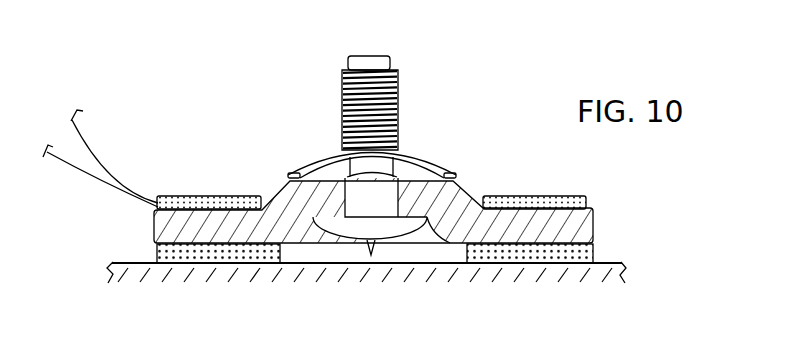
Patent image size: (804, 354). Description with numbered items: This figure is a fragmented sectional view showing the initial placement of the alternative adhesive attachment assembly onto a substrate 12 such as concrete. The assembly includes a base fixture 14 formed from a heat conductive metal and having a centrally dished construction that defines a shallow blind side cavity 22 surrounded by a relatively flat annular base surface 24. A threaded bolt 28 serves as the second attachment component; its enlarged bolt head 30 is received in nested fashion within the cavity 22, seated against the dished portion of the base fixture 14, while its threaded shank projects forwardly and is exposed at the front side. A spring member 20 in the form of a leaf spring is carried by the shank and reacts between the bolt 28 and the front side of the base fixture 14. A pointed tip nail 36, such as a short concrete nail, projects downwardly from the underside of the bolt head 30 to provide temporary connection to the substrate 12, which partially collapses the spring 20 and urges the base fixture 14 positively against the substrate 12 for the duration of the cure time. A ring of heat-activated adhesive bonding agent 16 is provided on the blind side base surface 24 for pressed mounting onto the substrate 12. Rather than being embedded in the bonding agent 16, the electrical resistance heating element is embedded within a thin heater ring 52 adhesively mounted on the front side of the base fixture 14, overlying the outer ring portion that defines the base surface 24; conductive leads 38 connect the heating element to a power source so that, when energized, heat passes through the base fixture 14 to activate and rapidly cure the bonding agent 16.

The substrate 12 is at (585, 270).
The base fixture 14 is at (517, 227).
The adhesive bonding agent 16 is at (195, 262).
The spring member 20 is at (322, 160).
The cavity 22 is at (303, 220).
The base surface 24 is at (157, 247).
The threaded bolt 28 is at (337, 93).
The bolt head 30 is at (350, 228).
The pointed tip nail 36 is at (372, 255).
The conductive leads 38 is at (130, 185).
The heater ring 52 is at (510, 196).